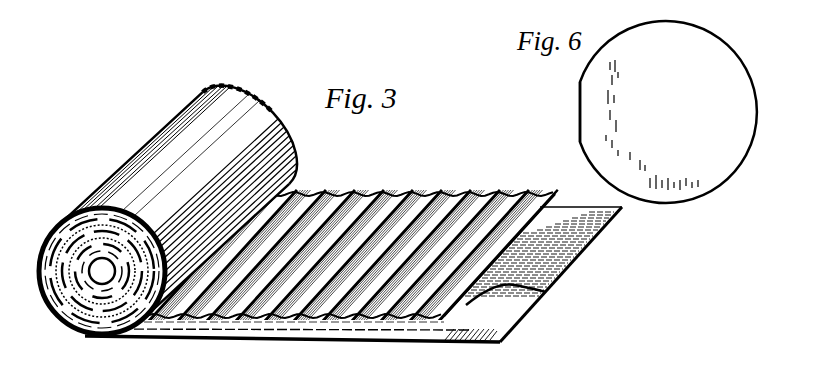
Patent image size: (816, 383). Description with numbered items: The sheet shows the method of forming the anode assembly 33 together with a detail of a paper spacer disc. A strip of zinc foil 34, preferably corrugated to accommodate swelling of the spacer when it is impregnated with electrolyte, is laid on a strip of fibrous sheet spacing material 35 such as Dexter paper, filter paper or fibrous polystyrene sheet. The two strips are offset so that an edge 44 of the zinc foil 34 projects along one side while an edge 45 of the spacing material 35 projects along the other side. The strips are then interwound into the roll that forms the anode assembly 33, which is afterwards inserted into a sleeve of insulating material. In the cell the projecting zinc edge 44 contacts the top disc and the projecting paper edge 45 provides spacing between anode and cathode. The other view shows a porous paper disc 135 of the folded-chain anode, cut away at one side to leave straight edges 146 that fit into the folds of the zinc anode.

In FIG. 3, the anode assembly 33 is at (116, 160).
In FIG. 3, the zinc foil 34 is at (487, 232).
In FIG. 3, the spacing material 35 is at (543, 295).
In FIG. 3, the edge of the zinc foil 44 is at (416, 176).
In FIG. 3, the edge of the spacing material 45 is at (387, 328).
In FIG. 6, the porous paper disc 135 is at (733, 22).
In FIG. 6, the straight edges 146 is at (580, 95).